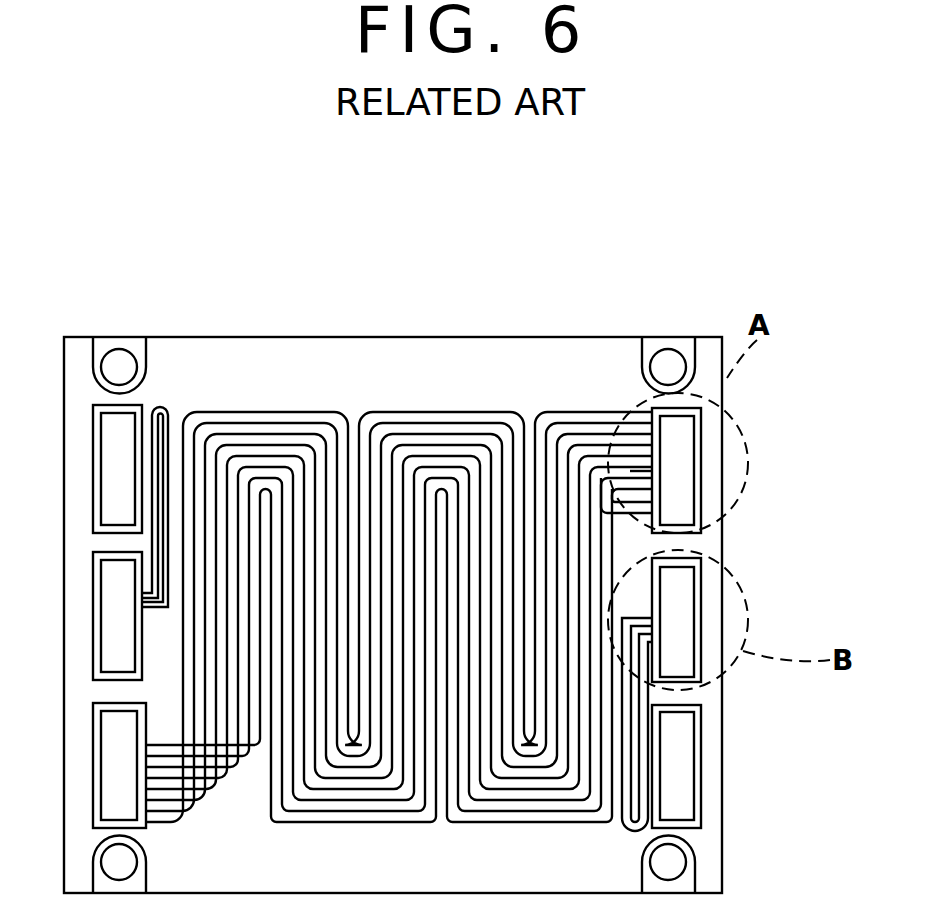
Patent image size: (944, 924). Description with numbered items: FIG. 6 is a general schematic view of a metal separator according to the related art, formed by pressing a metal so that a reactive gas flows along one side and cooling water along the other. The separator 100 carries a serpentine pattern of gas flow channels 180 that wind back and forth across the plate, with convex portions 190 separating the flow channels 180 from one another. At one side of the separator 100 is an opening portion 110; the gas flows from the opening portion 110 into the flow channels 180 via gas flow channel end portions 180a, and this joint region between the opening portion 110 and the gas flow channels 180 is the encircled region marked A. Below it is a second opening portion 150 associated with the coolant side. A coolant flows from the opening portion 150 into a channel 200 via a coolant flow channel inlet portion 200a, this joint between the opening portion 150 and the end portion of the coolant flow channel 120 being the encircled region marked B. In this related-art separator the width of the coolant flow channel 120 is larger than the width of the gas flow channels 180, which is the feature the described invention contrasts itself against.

The heater substrate 100 is at (398, 337).
The opening portion 110 is at (683, 428).
The convex portions 190 is at (656, 468).
The gas flow channel end portions 180a is at (640, 476).
The gas flow channels 180 is at (607, 511).
The opening portion 150 is at (683, 592).
The coolant flow channel inlet portion 200a is at (645, 632).
The channel 200 is at (633, 698).
The coolant flow channel 120 is at (675, 780).